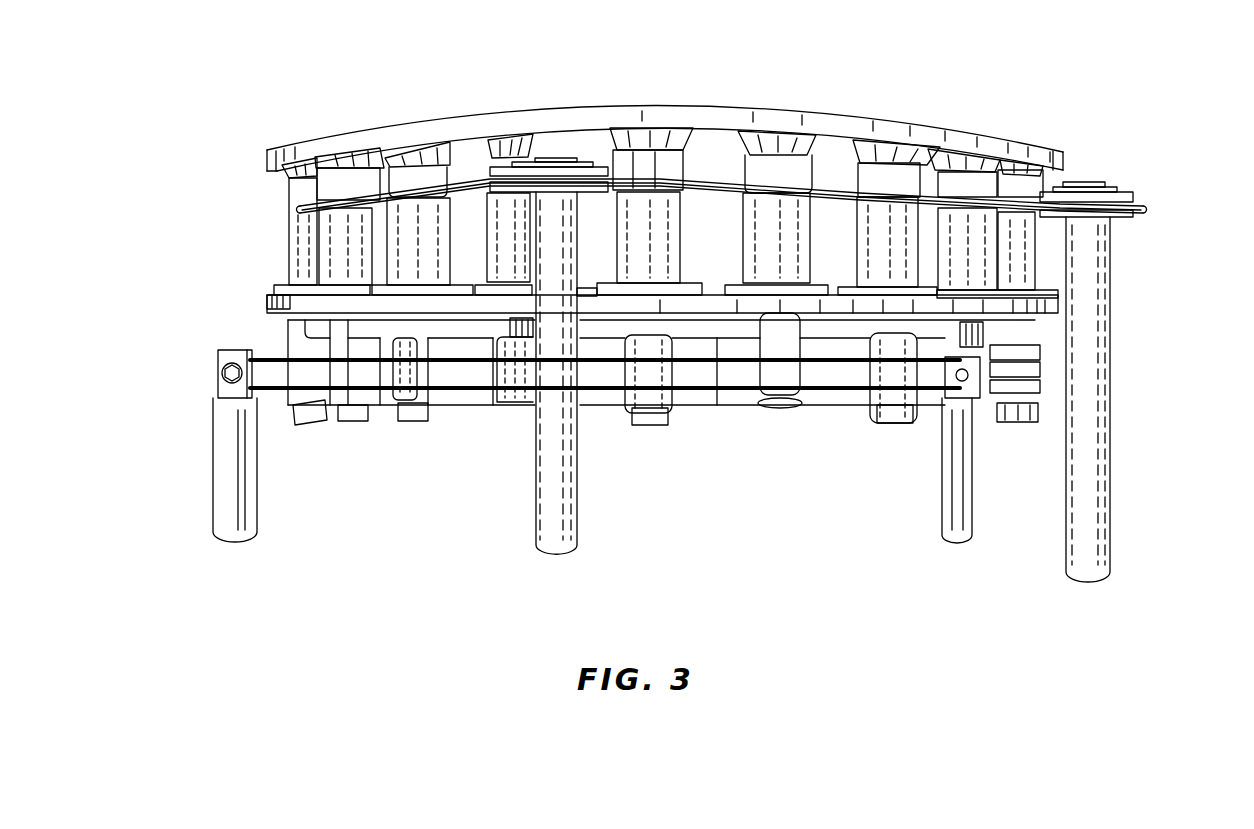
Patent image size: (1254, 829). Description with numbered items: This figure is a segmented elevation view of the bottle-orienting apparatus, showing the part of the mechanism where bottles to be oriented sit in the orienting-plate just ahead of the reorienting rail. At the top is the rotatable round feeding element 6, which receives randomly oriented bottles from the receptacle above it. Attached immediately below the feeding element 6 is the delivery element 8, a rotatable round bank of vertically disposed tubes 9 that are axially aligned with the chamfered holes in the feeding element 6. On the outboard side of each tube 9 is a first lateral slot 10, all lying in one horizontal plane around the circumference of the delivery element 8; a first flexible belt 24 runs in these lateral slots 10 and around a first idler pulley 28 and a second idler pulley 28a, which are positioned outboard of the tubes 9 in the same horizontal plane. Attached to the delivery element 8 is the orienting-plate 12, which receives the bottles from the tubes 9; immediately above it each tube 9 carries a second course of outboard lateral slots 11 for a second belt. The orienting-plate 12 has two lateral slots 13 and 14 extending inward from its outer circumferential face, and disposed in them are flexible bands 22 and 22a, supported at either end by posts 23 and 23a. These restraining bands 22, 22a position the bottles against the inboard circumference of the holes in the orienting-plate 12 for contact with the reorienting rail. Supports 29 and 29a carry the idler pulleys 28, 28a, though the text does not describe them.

The feeding element 6 is at (896, 123).
The delivery element 8 is at (1058, 297).
The tubes 9 is at (743, 222).
The first lateral slot 10 is at (877, 200).
The second course of outboard lateral slots 11 is at (313, 313).
The orienting-plate 12 is at (1042, 378).
The lateral slot 13 is at (1040, 365).
The lateral slot 14 is at (1043, 392).
The flexible band 22 is at (258, 395).
The flexible band 22a is at (290, 400).
The post 23 is at (950, 522).
The post 23a is at (228, 477).
The first flexible belt 24 is at (392, 204).
The first idler pulley 28 is at (1125, 196).
The second idler pulley 28a is at (597, 167).
The right column 29 is at (1078, 573).
The left column 29a is at (542, 522).